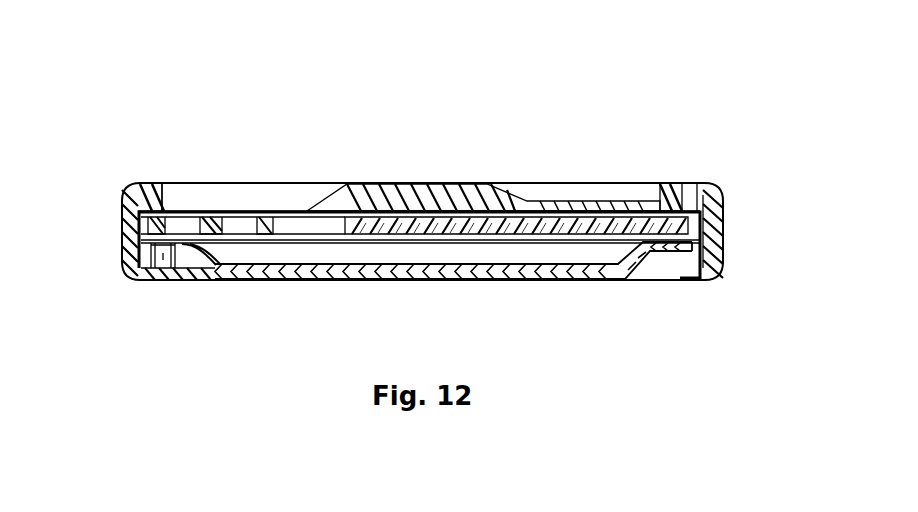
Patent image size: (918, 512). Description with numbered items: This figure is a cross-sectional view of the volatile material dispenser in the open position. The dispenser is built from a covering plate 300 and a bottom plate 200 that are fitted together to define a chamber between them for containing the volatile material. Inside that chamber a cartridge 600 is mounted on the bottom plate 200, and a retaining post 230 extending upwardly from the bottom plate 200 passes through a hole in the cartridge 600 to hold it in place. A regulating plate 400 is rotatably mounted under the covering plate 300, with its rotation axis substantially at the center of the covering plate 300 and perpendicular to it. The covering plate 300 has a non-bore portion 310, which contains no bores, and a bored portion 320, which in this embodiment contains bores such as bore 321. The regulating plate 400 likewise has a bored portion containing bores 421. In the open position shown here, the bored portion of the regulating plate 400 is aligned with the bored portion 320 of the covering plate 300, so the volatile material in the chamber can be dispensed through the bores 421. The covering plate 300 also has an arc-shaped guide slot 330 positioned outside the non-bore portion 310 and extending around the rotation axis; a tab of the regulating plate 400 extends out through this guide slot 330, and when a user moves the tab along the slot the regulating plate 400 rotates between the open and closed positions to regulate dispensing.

The covering plate 300 is at (121, 205).
The bored portion 320 is at (149, 193).
The bore 321 is at (213, 195).
The bores 421 is at (188, 223).
The non-bore portion 310 is at (596, 199).
The arc-shaped guide slot 330 is at (688, 187).
The regulating plate 400 is at (690, 224).
The bottom plate 200 is at (148, 270).
The retaining posts 230 is at (166, 269).
The cartridge 600 is at (688, 248).